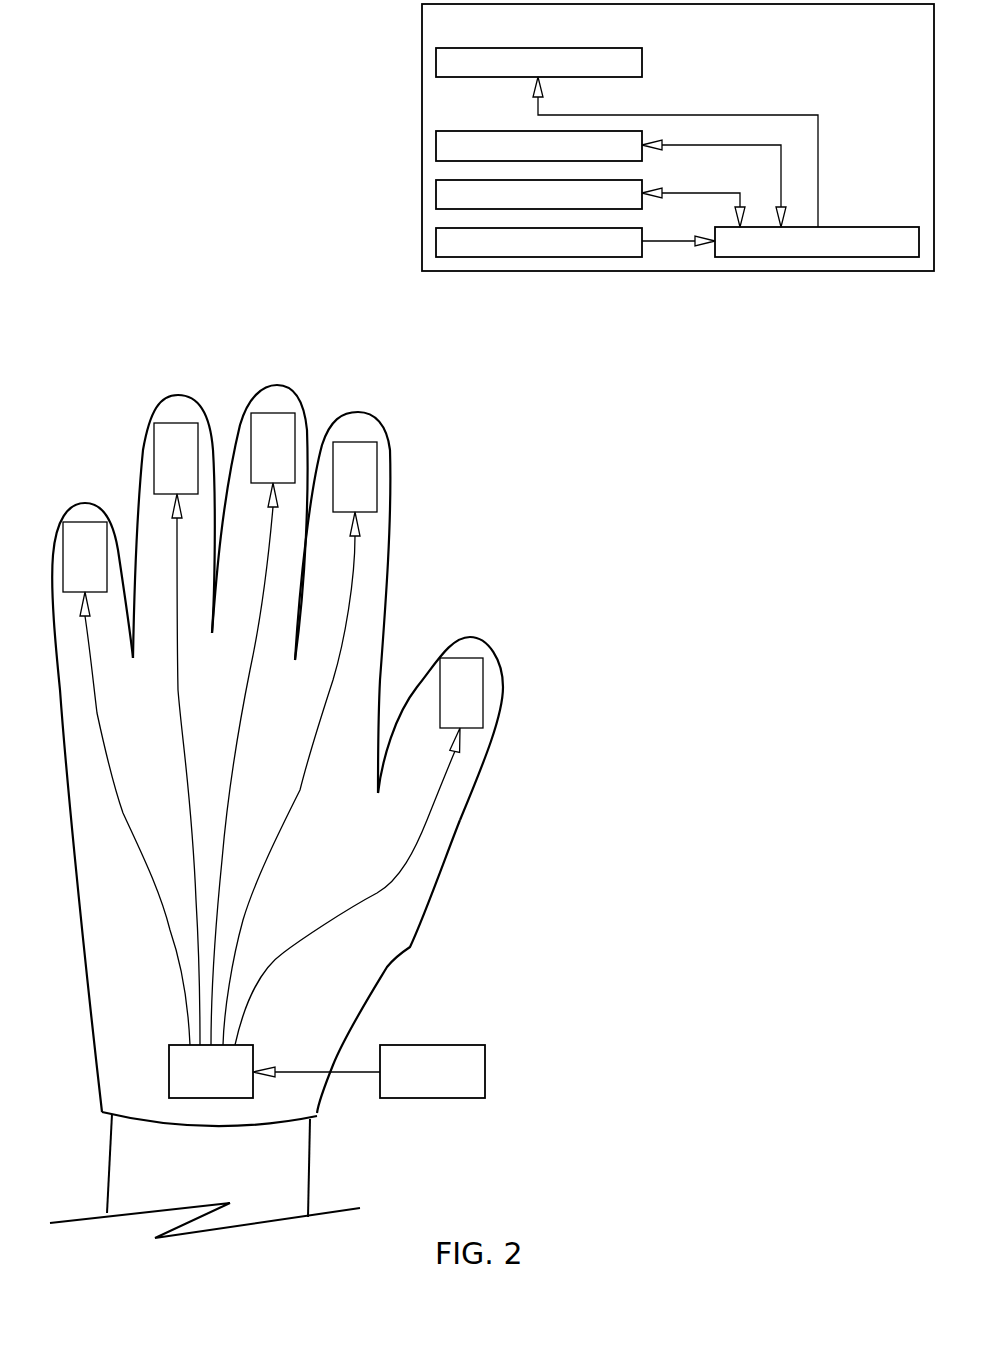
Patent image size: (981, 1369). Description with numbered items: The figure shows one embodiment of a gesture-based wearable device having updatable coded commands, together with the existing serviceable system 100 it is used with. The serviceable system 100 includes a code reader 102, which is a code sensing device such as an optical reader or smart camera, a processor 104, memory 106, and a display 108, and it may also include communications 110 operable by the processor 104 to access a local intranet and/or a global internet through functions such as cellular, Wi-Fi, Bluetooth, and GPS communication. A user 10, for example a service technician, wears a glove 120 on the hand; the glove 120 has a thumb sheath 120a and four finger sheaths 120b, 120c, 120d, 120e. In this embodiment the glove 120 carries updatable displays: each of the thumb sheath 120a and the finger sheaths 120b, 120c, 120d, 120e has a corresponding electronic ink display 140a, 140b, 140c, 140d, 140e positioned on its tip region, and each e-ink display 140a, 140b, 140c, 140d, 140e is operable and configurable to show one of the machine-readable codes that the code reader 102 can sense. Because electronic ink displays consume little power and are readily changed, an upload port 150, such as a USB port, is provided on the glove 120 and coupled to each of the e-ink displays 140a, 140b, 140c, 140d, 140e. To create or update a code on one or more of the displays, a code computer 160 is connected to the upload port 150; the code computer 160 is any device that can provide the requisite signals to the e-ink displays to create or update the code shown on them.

The serviceable system 100 is at (420, 33).
The display 108 is at (436, 68).
The communications 110 is at (436, 155).
The memory 106 is at (436, 193).
The code reader 102 is at (436, 248).
The processor 104 is at (880, 258).
The glove 120 is at (410, 943).
The thumb sheath 120a is at (502, 653).
The finger sheath 120b is at (388, 415).
The finger sheath 120c is at (295, 387).
The finger sheath 120d is at (208, 398).
The finger sheath 120e is at (97, 503).
The e-ink display 140a is at (455, 658).
The e-ink display 140b is at (358, 442).
The e-ink display 140c is at (263, 413).
The e-ink display 140d is at (171, 423).
The e-ink display 140e is at (68, 522).
The upload port 150 is at (168, 1063).
The code computer 160 is at (485, 1052).
The user 10 is at (280, 1157).